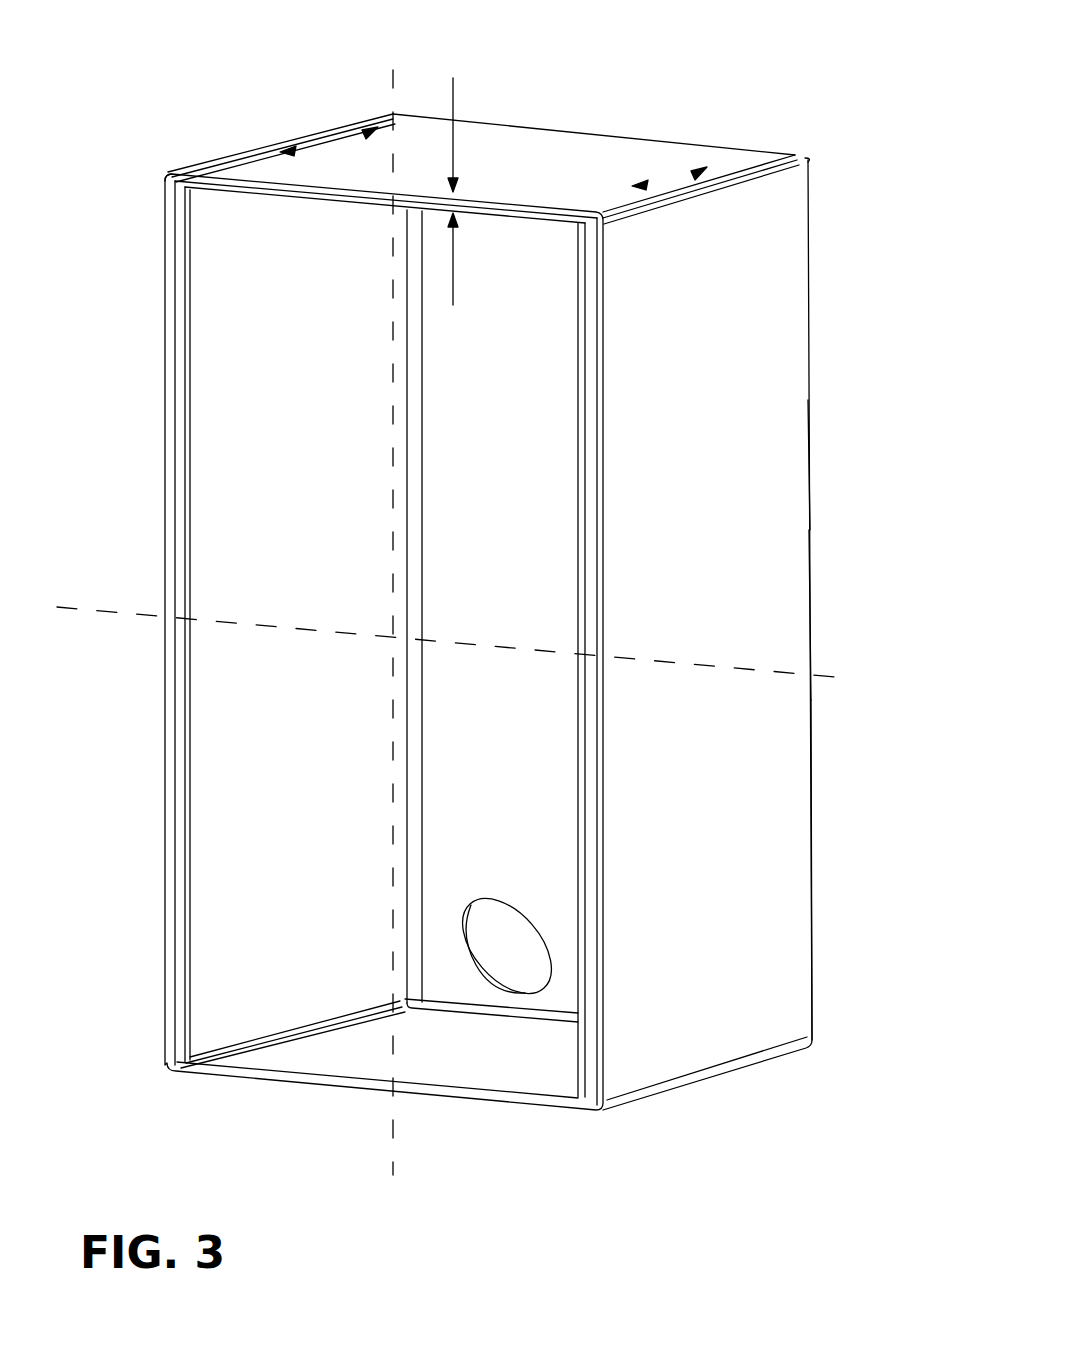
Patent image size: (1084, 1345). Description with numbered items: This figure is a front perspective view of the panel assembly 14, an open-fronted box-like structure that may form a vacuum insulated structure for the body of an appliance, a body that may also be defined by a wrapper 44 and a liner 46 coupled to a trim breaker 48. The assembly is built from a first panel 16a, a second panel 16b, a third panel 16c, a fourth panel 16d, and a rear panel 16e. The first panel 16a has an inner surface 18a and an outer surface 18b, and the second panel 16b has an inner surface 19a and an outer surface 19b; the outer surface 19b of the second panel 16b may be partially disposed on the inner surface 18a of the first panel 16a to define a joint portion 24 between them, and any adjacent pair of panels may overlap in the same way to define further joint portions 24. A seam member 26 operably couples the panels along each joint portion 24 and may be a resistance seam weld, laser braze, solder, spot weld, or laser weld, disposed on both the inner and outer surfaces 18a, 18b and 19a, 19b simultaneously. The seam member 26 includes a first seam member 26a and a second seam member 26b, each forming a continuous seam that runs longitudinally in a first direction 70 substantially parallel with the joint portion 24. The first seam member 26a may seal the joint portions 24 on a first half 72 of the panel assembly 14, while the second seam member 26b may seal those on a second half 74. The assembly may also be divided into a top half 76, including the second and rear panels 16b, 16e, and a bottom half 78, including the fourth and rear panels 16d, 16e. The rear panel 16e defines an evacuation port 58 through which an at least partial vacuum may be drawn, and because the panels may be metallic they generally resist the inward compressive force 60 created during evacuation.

The panel assembly 14 is at (832, 97).
The first panel 16a is at (230, 668).
The second panel 16b is at (530, 162).
The third panel 16c is at (730, 515).
The fourth panel 16d is at (440, 1052).
The rear panel 16e is at (520, 578).
The inner surface of first panel 18a is at (252, 460).
The outer surface of first panel 18b is at (160, 357).
The inner surface of second panel 19a is at (255, 190).
The outer surface of second panel 19b is at (490, 152).
The joint portion 24 is at (707, 182).
The seam member 26 is at (415, 805).
The first seam member 26a is at (258, 147).
The second seam member 26b is at (793, 152).
The wrapper 44 is at (712, 147).
The liner 46 is at (258, 357).
The trim breaker 48 is at (160, 180).
The evacuation port 58 is at (498, 984).
The inward compressive force 60 is at (453, 100).
The first direction 70 is at (345, 145).
The first half 72 is at (160, 305).
The second half 74 is at (655, 392).
The top half 76 is at (812, 465).
The bottom half 78 is at (812, 948).